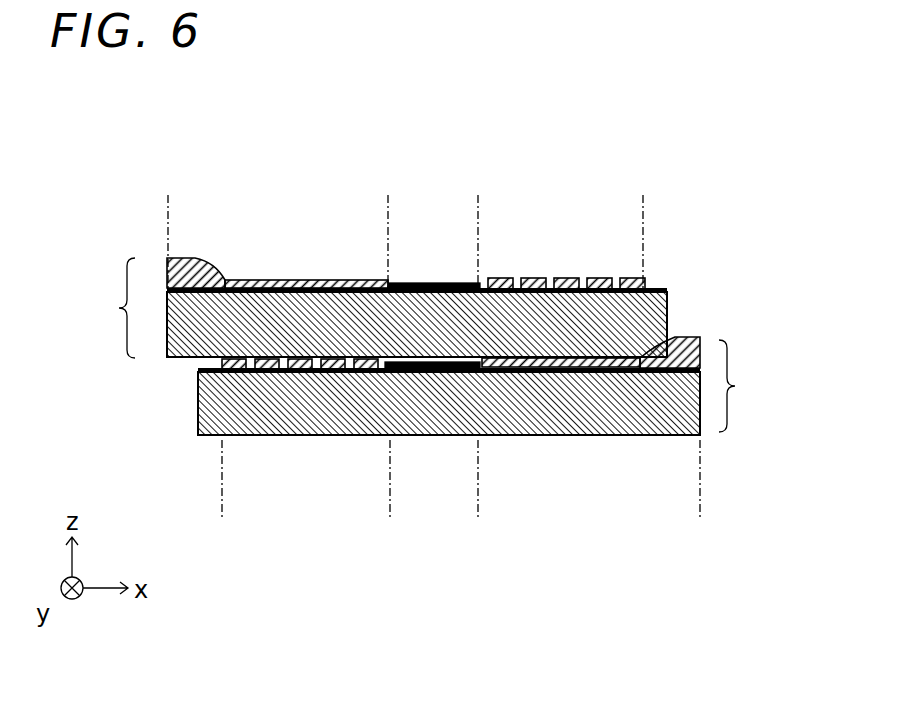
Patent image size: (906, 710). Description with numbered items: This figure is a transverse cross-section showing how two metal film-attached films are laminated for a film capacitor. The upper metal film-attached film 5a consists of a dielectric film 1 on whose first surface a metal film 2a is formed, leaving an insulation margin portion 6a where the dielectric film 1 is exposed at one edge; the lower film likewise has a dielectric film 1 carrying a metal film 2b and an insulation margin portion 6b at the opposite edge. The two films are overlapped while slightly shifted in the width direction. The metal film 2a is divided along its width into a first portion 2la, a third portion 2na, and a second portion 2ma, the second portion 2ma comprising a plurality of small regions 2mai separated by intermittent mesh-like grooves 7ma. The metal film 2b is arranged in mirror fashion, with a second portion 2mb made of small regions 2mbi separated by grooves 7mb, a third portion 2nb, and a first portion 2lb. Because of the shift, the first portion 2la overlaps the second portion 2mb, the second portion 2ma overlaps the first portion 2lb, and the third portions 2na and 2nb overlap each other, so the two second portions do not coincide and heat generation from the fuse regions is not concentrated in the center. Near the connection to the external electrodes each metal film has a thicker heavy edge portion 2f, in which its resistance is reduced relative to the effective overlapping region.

The dielectric film 1 is at (198, 345).
The insulation margin portion 6a is at (668, 293).
The insulation margin portion 6b is at (200, 385).
The metal film-attached film 5a is at (422, 345).
The metal film 2a is at (465, 219).
The first portion 2la is at (465, 257).
The third portion 2na is at (447, 283).
The second portion 2ma is at (617, 218).
The small region 2mai is at (565, 278).
The groove 7ma is at (688, 239).
The heavy edge portion 2f is at (388, 203).
The metal film 2b is at (420, 501).
The second portion 2mb is at (265, 467).
The small region 2mbi is at (335, 372).
The groove 7mb is at (278, 372).
The third portion 2nb is at (413, 372).
The first portion 2lb is at (589, 467).